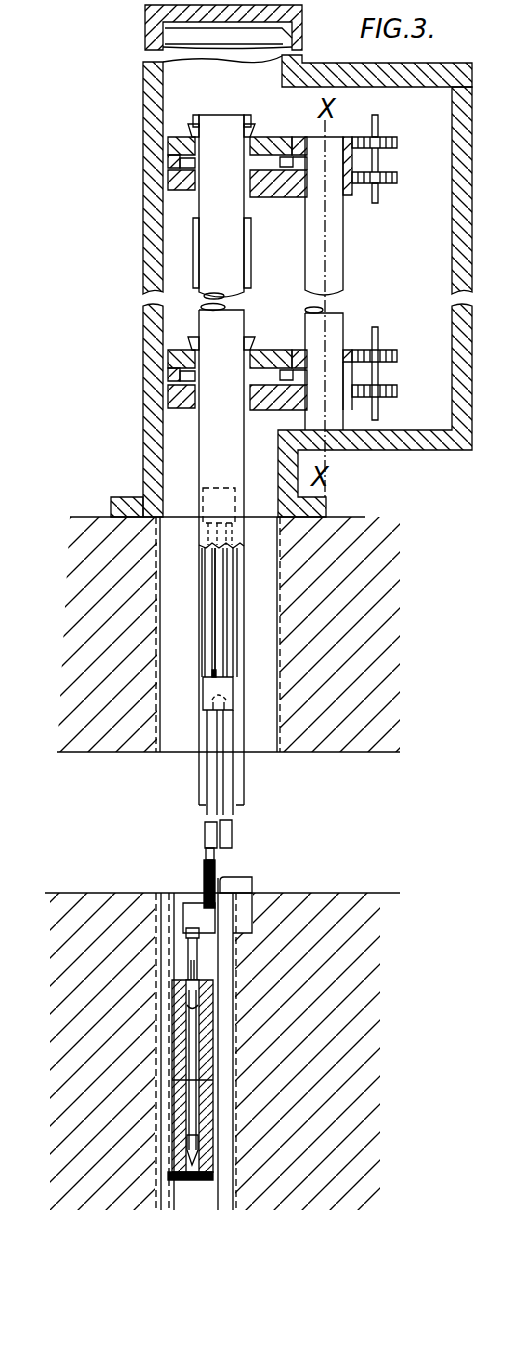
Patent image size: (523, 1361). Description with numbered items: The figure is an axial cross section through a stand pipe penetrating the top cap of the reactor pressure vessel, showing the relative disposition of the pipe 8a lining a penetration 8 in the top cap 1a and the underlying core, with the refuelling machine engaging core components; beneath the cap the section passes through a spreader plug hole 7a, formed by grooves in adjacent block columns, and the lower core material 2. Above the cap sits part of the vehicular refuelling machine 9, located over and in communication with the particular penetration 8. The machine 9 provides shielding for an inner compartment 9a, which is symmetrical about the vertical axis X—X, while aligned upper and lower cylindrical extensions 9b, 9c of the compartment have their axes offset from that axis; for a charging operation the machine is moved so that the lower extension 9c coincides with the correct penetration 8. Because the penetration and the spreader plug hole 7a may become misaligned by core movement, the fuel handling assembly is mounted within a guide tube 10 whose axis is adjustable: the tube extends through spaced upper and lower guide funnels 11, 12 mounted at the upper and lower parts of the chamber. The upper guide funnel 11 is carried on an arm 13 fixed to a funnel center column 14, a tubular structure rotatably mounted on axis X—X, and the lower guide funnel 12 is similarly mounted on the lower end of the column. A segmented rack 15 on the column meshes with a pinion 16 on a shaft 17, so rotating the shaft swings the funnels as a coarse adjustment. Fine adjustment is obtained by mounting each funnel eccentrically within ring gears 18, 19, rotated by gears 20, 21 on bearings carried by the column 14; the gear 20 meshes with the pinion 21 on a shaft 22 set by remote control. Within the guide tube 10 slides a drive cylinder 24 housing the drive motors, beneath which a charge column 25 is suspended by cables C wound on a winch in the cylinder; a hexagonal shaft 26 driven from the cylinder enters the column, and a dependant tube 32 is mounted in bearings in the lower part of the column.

The top cap 1a is at (327, 740).
The lower formation block 2 is at (95, 1023).
The spreader plug hole 7a is at (237, 1043).
The penetration 8 is at (257, 560).
The stand pipe 8a is at (273, 743).
The vehicular refuelling machine 9 is at (156, 262).
The inner compartment 9a is at (413, 281).
The upper cylindrical extension 9b is at (178, 36).
The lower cylindrical extension 9c is at (150, 467).
The guide tube 10 is at (219, 113).
The upper guide funnel 11 is at (200, 118).
The lower guide funnel 12 is at (200, 336).
The arm 13 is at (257, 197).
The funnel center column 14 is at (312, 257).
The segmented rack 15 is at (350, 167).
The pinion 16 is at (396, 183).
The shaft 17 is at (379, 200).
The ring gear 18 is at (272, 128).
The ring gear 19 is at (274, 312).
The gear 20 is at (306, 140).
The pinion 21 is at (398, 143).
The shaft 22 is at (379, 125).
The drive cylinder 24 is at (220, 488).
The charge column 25 is at (200, 688).
The hexagonal shaft 26 is at (232, 603).
The dependant tube 32 is at (250, 726).
The cables C is at (211, 600).